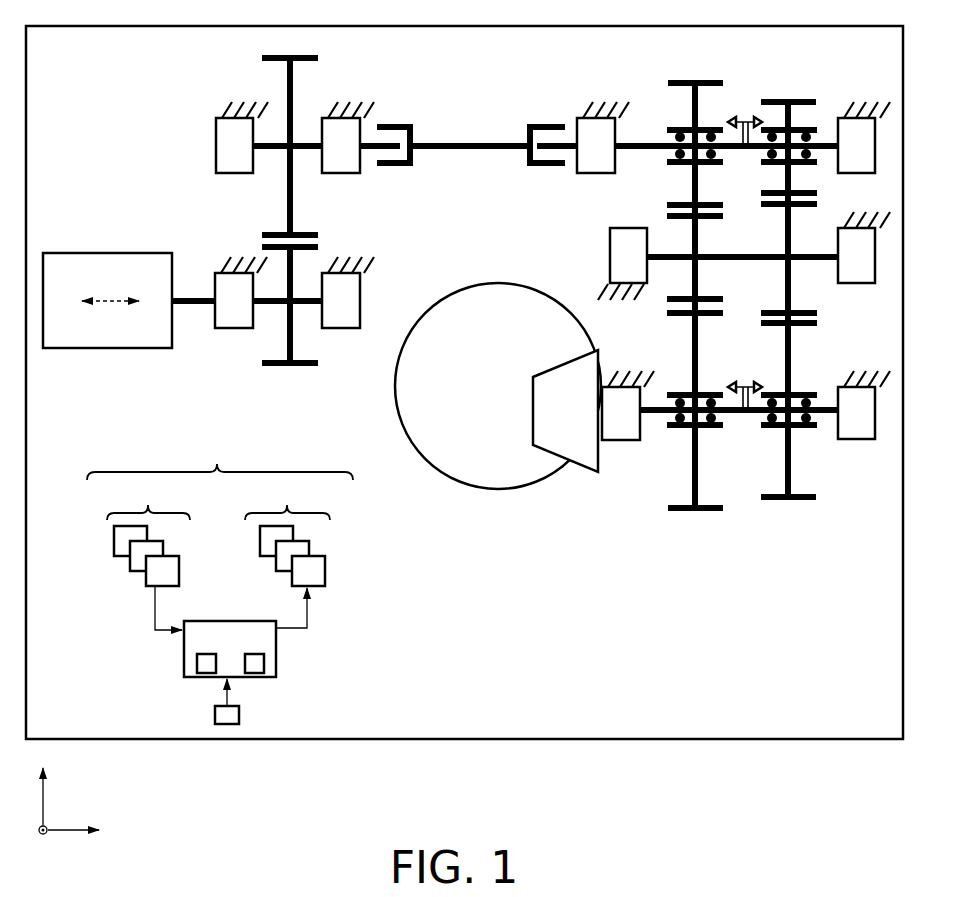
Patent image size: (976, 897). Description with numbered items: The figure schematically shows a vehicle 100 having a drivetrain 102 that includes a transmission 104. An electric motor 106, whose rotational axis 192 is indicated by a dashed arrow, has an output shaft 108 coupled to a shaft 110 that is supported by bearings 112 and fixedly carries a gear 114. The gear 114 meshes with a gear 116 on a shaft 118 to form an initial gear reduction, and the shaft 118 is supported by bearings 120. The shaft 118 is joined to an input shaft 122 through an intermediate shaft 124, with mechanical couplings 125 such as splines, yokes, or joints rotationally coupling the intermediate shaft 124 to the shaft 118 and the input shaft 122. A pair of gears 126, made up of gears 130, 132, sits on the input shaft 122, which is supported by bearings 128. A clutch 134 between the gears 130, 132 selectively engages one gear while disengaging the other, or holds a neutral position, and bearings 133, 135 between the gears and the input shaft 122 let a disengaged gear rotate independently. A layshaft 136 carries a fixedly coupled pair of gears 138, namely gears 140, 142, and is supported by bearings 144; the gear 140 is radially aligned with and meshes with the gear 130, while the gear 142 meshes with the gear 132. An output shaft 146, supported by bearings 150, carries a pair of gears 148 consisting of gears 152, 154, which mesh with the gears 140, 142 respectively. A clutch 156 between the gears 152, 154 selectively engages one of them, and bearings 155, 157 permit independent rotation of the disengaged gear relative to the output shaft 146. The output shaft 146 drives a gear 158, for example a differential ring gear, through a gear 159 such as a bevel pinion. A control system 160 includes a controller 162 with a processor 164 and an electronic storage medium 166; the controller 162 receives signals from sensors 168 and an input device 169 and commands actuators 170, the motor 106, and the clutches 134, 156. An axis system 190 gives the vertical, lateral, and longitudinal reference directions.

The vehicle 100 is at (48, 30).
The drivetrain 102 is at (78, 76).
The transmission 104 is at (148, 111).
The electric motor 106 is at (48, 257).
The output shaft 108 is at (190, 305).
The shaft 110 is at (308, 305).
The bearings 112 is at (236, 330).
The gear 114 is at (303, 366).
The gear 116 is at (318, 58).
The shaft 118 is at (273, 151).
The bearings 120 is at (216, 166).
The input shaft 122 is at (651, 150).
The intermediate shaft 124 is at (491, 151).
The mechanical couplings 125 is at (394, 167).
The pair of gears 126 is at (651, 73).
The bearings 128 is at (601, 175).
The gear 130 is at (679, 85).
The gear 132 is at (769, 102).
The bearing 133 is at (673, 128).
The clutch 134 is at (746, 100).
The bearing 135 is at (822, 131).
The layshaft 136 is at (749, 261).
The pair of gears 138 is at (656, 305).
The gear 140 is at (699, 232).
The gear 142 is at (795, 300).
The bearings 144 is at (610, 261).
The output shaft 146 is at (756, 413).
The pair of gears 148 is at (646, 517).
The bearings 150 is at (622, 442).
The gear 152 is at (686, 510).
The gear 154 is at (812, 499).
The bearing 155 is at (667, 420).
The clutch 156 is at (746, 384).
The bearing 157 is at (820, 396).
The gear 158 is at (502, 490).
The gear 159 is at (572, 473).
The control system 160 is at (220, 457).
The controller 162 is at (242, 651).
The processor 164 is at (197, 664).
The electronic storage medium 166 is at (264, 664).
The sensors 168 is at (148, 556).
The input device 169 is at (239, 714).
The actuators 170 is at (287, 553).
The axis system 190 is at (71, 806).
The motor's rotational axis 192 is at (112, 303).